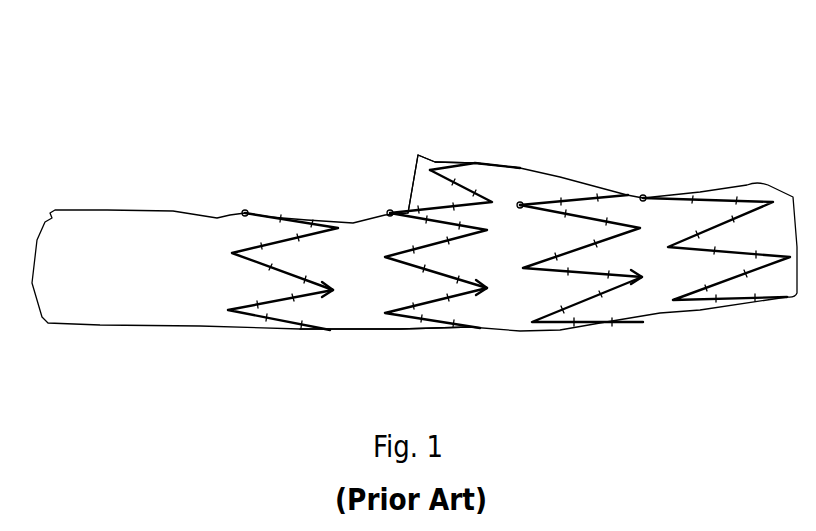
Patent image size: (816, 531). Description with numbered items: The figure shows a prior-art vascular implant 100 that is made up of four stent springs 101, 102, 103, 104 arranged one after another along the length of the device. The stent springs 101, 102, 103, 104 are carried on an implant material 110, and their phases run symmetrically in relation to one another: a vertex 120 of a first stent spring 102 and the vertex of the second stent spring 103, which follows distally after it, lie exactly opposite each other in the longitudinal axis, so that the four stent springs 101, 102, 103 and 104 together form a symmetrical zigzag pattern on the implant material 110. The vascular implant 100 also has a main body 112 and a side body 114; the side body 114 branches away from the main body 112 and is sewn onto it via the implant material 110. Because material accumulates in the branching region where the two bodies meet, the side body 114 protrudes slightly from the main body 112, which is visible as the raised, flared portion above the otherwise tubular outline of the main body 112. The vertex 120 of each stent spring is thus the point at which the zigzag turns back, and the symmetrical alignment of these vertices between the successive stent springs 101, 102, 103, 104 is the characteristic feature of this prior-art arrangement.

The vascular implant 100 is at (302, 99).
The stent spring 101 is at (273, 322).
The first stent spring 102 is at (433, 322).
The second stent spring 103 is at (632, 290).
The stent spring 104 is at (768, 270).
The implant material 110 is at (99, 223).
The main body 112 is at (368, 338).
The side body 114 is at (460, 155).
The vertex 120 is at (335, 288).